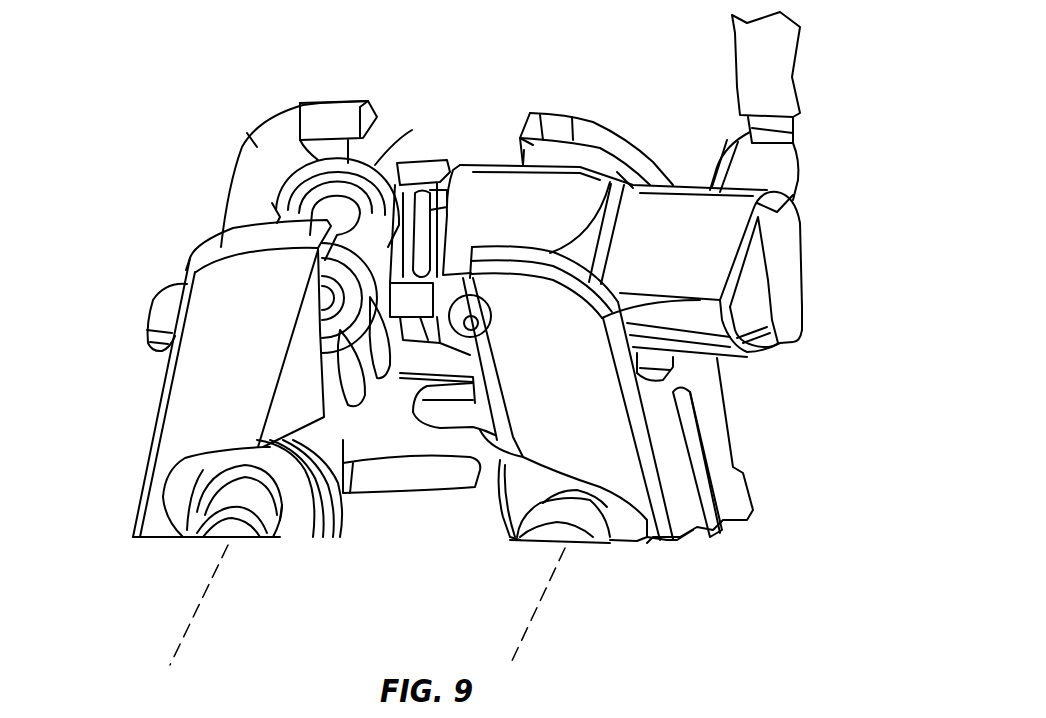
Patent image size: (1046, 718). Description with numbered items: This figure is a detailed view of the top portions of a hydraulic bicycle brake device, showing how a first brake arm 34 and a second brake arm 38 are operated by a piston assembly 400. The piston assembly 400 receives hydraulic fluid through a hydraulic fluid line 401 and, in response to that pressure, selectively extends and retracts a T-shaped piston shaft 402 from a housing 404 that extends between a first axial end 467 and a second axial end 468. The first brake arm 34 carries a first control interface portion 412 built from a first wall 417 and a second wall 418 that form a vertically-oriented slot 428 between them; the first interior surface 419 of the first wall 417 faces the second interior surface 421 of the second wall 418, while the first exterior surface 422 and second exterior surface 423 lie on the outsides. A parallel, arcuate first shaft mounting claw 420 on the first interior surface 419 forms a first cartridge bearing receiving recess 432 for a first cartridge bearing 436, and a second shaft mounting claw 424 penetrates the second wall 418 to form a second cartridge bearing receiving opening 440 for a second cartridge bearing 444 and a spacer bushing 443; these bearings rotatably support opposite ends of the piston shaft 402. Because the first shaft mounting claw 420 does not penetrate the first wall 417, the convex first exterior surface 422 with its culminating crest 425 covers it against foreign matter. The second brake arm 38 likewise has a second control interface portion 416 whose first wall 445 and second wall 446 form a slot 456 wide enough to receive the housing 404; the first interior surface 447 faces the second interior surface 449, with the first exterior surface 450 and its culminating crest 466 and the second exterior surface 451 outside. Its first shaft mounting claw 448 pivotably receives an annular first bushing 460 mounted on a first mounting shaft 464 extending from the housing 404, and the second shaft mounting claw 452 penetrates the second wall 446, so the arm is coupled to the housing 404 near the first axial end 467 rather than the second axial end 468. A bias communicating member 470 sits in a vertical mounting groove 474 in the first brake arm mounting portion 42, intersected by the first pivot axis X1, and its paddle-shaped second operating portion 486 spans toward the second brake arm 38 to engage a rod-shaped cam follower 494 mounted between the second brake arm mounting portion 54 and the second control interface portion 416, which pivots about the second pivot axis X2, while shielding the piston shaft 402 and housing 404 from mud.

The hydraulic fluid line 401 is at (733, 38).
The piston shaft 402 is at (382, 157).
The housing 404 is at (572, 208).
The piston assembly 400 is at (488, 135).
The first control interface portion 412 is at (205, 113).
The second control interface portion 416 is at (607, 103).
The first wall 417 is at (170, 372).
The second wall 418 is at (228, 130).
The first interior surface 419 is at (207, 250).
The first shaft mounting claw 420 is at (190, 263).
The second interior surface 421 is at (267, 180).
The first exterior surface 422 is at (193, 408).
The second exterior surface 423 is at (320, 103).
The second shaft mounting claw 424 is at (237, 165).
The culminating crest 425 is at (265, 412).
The slot 428 is at (240, 213).
The first cartridge bearing receiving recess 432 is at (320, 282).
The first cartridge bearing 436 is at (345, 309).
The second cartridge bearing receiving opening 440 is at (303, 107).
The spacer bushing 443 is at (382, 153).
The second cartridge bearing 444 is at (348, 140).
The first wall 445 is at (597, 297).
The second wall 446 is at (630, 143).
The first interior surface 447 is at (600, 272).
The first shaft mounting claw 448 is at (493, 237).
The second interior surface 449 is at (622, 186).
The first exterior surface 450 is at (607, 422).
The second exterior surface 451 is at (573, 138).
The second shaft mounting claw 452 is at (521, 140).
The slot 456 is at (542, 148).
The first bushing 460 is at (456, 300).
The first mounting shaft 464 is at (473, 328).
The culminating crest 466 is at (513, 437).
The first axial end 467 is at (463, 165).
The second axial end 468 is at (798, 192).
The bias communicating member 470 is at (349, 530).
The mounting groove 474 is at (343, 377).
The second operating portion 486 is at (415, 477).
The cam follower 494 is at (424, 414).
The first brake arm 34 is at (124, 420).
The second brake arm 38 is at (765, 436).
The first brake arm mounting portion 42 is at (110, 495).
The second brake arm mounting portion 54 is at (778, 491).
The first pivot axis X1 is at (188, 622).
The second pivot axis X2 is at (550, 579).